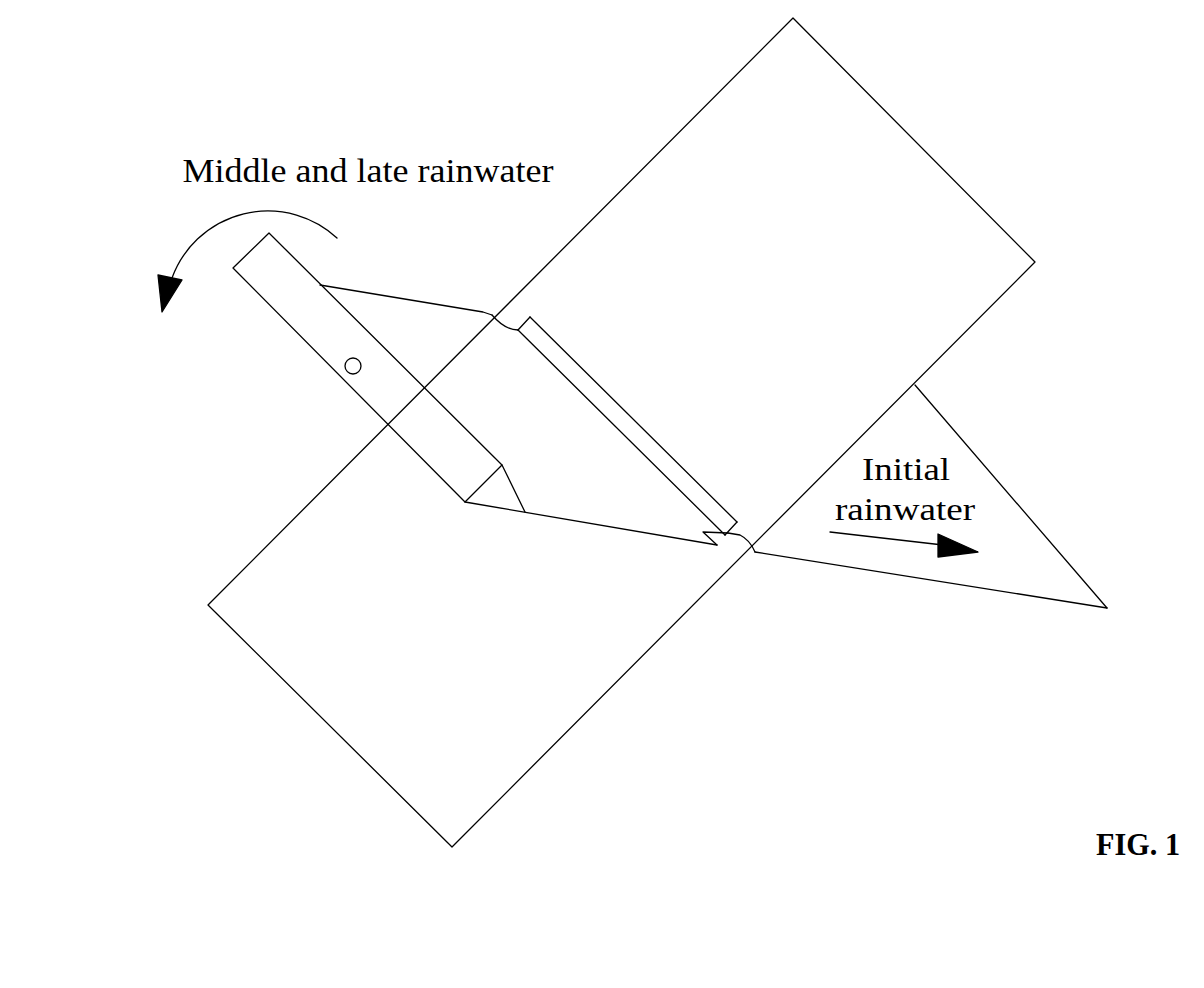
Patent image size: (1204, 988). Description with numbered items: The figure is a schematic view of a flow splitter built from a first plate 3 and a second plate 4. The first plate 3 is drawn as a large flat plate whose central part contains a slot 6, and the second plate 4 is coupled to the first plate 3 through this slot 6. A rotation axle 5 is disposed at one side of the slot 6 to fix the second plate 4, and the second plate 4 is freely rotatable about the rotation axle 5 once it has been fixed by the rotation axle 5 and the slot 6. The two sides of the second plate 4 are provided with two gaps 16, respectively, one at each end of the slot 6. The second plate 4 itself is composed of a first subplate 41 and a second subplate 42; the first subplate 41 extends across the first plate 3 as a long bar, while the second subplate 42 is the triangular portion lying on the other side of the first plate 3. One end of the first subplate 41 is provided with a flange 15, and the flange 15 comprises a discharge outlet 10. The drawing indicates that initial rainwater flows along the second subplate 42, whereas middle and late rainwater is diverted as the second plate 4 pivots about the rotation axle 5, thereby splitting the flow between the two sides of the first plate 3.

The first plate 3 is at (621, 423).
The flange 15 is at (351, 372).
The discharge outlet 10 is at (292, 384).
The gap 16 is at (615, 389).
The rotation axle 5 is at (627, 397).
The slot 6 is at (627, 432).
The second plate 4 is at (786, 532).
The first subplate 41 is at (638, 587).
The second subplate 42 is at (1011, 532).